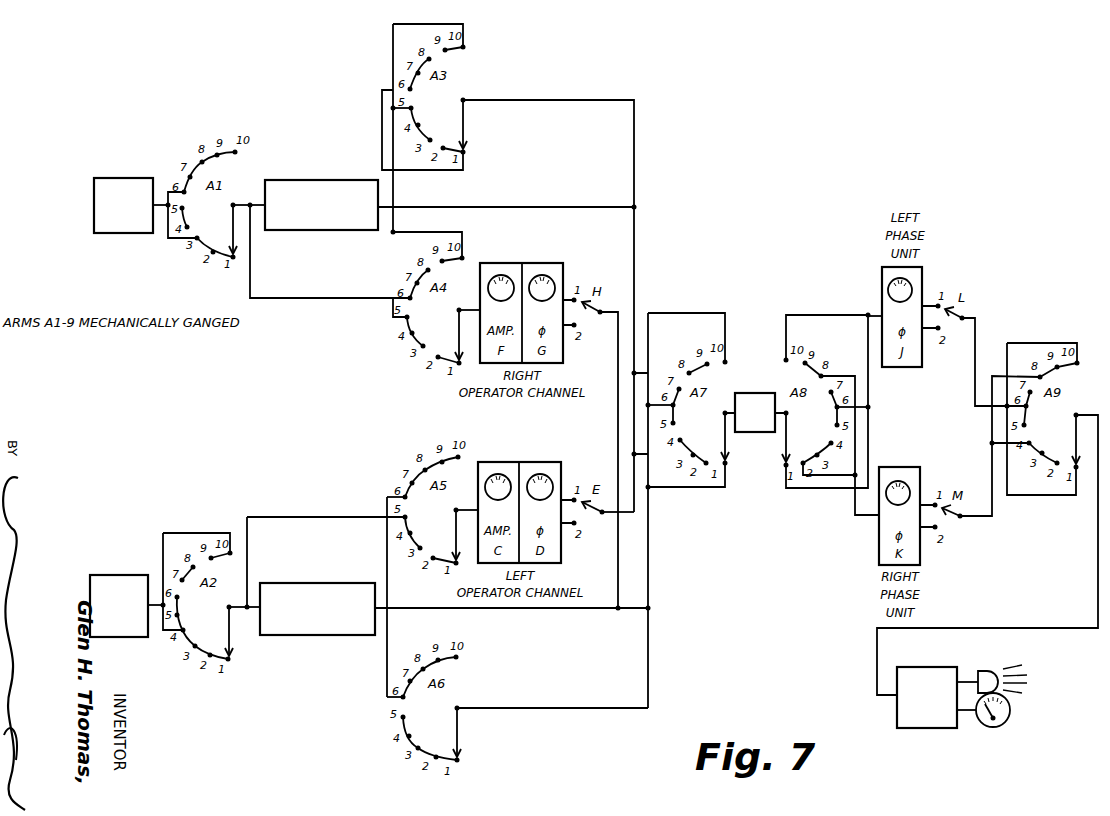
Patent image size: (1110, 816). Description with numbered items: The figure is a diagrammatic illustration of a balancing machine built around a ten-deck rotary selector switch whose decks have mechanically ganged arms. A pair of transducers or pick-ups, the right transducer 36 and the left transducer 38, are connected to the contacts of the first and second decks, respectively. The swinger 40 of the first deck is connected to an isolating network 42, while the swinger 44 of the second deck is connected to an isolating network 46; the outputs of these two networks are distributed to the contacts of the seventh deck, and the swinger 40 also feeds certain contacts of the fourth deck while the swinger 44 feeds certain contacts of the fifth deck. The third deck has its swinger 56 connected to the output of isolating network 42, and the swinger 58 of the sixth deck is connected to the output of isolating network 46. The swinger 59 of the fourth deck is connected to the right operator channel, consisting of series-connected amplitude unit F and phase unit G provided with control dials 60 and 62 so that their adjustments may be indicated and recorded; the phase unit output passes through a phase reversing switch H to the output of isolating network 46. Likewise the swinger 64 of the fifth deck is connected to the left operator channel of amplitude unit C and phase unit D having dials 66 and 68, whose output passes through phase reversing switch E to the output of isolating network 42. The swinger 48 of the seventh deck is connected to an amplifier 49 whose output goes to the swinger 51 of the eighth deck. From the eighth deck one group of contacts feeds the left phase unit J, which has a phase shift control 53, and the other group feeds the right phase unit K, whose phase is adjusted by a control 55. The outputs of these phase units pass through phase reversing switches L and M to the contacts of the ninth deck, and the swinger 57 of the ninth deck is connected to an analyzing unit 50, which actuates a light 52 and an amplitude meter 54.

The right transducer 36 is at (130, 177).
The transducer 38 is at (128, 574).
The swinger 40 is at (232, 228).
The isolating network 42 is at (330, 180).
The swinger 44 is at (233, 627).
The isolating network 46 is at (328, 583).
The swinger 48 is at (728, 435).
The amplifier 49 is at (754, 393).
The analyzing unit 50 is at (934, 712).
The swinger 51 is at (789, 445).
The light 52 is at (994, 670).
The phase shift control 53 is at (911, 287).
The amplitude meter 54 is at (1009, 722).
The control 55 is at (906, 486).
The swinger 56 is at (466, 127).
The swinger 57 is at (1073, 446).
The swinger 58 is at (460, 733).
The swinger 59 is at (458, 337).
The control dial 60 is at (506, 278).
The control dial 62 is at (547, 278).
The swinger 64 is at (455, 533).
The dial 66 is at (502, 477).
The dial 68 is at (543, 477).